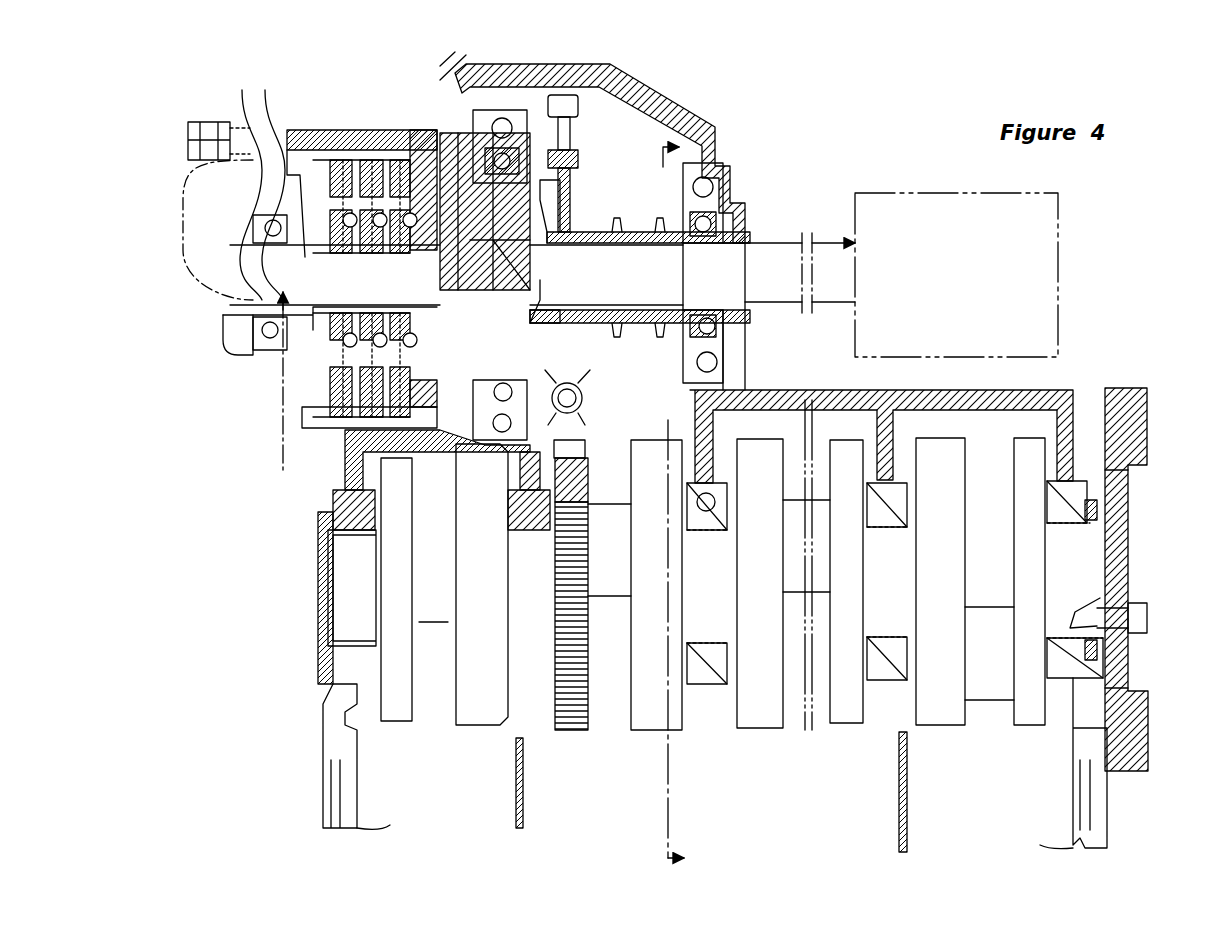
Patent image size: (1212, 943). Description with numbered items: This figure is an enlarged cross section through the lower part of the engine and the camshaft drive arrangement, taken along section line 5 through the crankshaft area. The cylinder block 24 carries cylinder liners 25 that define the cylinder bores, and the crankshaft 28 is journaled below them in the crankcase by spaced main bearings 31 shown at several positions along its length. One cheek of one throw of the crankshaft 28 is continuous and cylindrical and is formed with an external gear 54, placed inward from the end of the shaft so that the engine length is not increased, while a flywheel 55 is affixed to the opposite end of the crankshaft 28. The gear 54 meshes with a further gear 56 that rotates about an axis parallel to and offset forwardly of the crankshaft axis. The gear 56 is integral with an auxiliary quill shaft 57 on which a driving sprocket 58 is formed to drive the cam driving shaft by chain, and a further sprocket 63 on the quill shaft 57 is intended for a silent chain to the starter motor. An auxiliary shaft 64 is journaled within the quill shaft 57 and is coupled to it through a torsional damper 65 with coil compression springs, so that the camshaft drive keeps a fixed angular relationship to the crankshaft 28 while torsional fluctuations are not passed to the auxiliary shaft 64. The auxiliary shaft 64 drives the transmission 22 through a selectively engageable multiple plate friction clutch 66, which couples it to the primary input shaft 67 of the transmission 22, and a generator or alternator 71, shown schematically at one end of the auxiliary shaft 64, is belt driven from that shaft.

The section line 5- 5 is at (664, 498).
The transmission 22 is at (277, 353).
The cylinder block 24 is at (328, 794).
The cylinder liners 25 is at (515, 776).
The crankshaft 28 is at (348, 606).
The main bearings 31 is at (364, 534).
The external gear 54 is at (570, 731).
The flywheel 55 is at (1140, 447).
The gear 56 is at (580, 104).
The auxiliary quill shaft 57 is at (596, 231).
The driving sprocket 58 is at (657, 221).
The sprocket 63 is at (613, 337).
The auxiliary shaft 64 is at (757, 256).
The torsional damper 65 is at (582, 402).
The friction clutch 66 is at (343, 118).
The primary input shaft 67 is at (237, 307).
The generator or alternator 71 is at (940, 190).